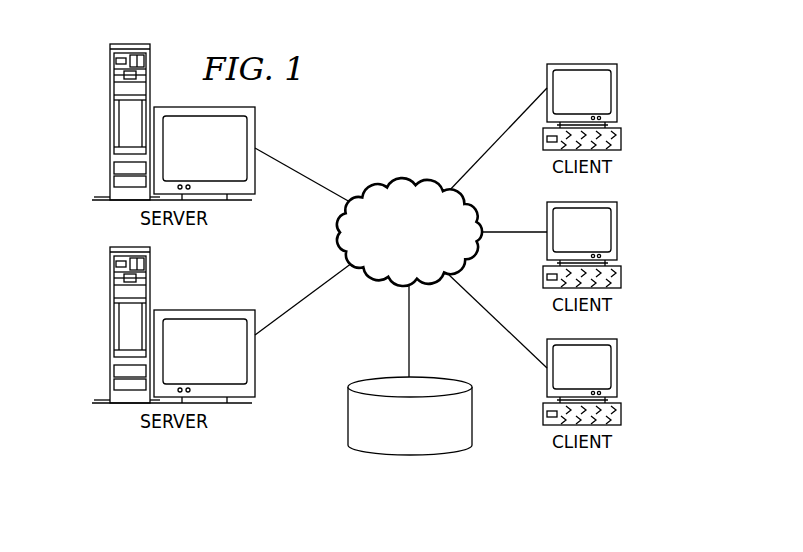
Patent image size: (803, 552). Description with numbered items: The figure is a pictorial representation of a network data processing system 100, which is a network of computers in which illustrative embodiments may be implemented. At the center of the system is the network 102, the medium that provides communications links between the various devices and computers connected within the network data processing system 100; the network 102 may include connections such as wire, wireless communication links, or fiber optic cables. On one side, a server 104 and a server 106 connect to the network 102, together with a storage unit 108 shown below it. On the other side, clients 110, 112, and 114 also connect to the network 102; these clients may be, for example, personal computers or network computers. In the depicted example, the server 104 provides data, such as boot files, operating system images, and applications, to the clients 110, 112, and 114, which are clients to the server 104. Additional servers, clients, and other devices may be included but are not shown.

The network data processing system 100 is at (455, 75).
The network 102 is at (381, 186).
The server 104 is at (110, 125).
The server 106 is at (110, 328).
The storage unit 108 is at (392, 458).
The client 110 is at (617, 93).
The client 112 is at (617, 232).
The client 114 is at (618, 370).